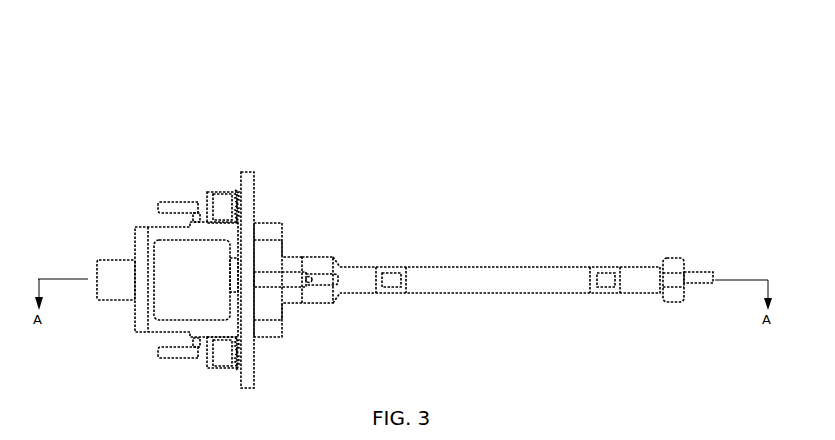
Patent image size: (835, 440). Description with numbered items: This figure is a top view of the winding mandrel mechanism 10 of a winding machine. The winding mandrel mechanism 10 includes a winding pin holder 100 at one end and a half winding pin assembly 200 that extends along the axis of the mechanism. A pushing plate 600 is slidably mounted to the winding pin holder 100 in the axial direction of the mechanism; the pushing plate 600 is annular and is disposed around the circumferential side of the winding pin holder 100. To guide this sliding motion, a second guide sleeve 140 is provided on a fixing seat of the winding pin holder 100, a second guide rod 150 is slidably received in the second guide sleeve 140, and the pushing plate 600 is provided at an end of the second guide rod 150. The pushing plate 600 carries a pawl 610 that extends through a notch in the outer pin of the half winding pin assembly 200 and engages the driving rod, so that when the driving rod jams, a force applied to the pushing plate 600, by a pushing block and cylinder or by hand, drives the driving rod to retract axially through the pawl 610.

The winding mandrel mechanism 10 is at (150, 32).
The winding pin holder 100 is at (123, 270).
The second guide sleeve 140 is at (208, 195).
The second guide rod 150 is at (172, 207).
The half winding pin assembly 200 is at (498, 262).
The pushing plate 600 is at (248, 178).
The pawl 610 is at (291, 278).